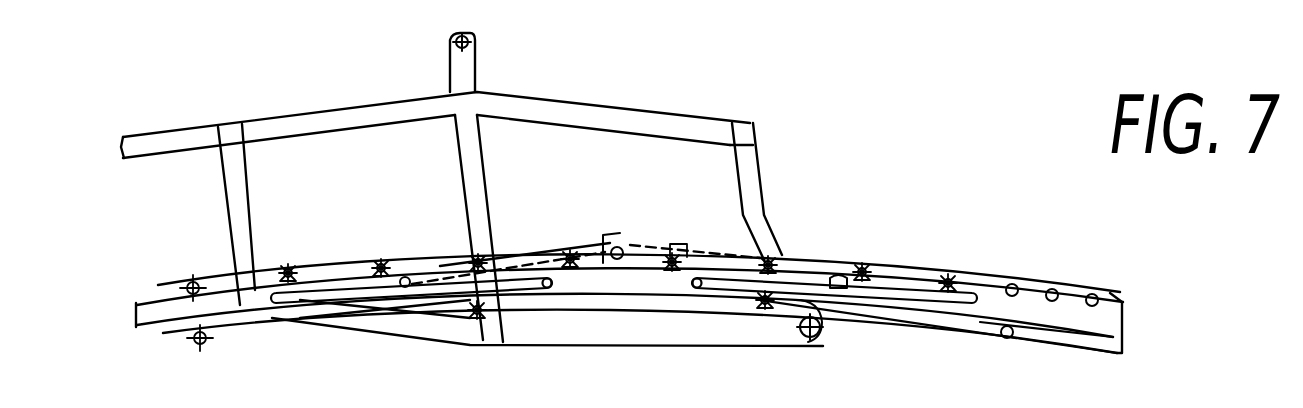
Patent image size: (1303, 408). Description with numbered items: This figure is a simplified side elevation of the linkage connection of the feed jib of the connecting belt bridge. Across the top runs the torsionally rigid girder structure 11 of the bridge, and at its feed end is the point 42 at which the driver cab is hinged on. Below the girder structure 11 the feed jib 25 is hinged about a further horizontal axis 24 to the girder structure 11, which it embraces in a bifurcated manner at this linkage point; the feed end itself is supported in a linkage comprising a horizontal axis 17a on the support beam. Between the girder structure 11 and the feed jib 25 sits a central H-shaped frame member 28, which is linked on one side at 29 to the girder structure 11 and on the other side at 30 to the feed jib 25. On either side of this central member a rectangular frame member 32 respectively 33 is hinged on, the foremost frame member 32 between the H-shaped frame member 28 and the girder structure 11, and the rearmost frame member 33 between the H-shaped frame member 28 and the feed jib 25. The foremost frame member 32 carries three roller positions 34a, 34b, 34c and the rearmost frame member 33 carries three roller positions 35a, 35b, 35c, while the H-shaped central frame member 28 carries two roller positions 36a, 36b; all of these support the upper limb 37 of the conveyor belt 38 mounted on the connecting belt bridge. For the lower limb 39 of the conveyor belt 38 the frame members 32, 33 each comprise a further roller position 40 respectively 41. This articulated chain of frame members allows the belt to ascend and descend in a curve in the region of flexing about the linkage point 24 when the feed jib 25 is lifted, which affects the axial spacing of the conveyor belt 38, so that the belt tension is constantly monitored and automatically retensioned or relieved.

The girder structure 11 is at (320, 120).
The hinge point for driver cab 42 is at (470, 41).
The H-shaped frame member 28 is at (588, 284).
The rectangular frame member 32 is at (315, 292).
The rectangular frame member 33 is at (912, 300).
The linkage point 29 is at (403, 287).
The horizontal axis 24 is at (621, 247).
The linkage point 30 is at (835, 275).
The roller position 34a is at (288, 266).
The roller position 34b is at (381, 262).
The roller position 34c is at (480, 256).
The roller position 36a is at (570, 253).
The roller position 36b is at (675, 255).
The roller position 35a is at (771, 260).
The roller position 35b is at (868, 268).
The roller position 35c is at (954, 279).
The roller position 40 is at (475, 318).
The roller position 41 is at (762, 308).
The horizontal axis 17a is at (805, 340).
The feed jib 25 is at (1037, 315).
The upper limb 37 is at (1092, 290).
The lower limb 39 is at (1092, 345).
The conveyor belt 38 is at (1202, 277).